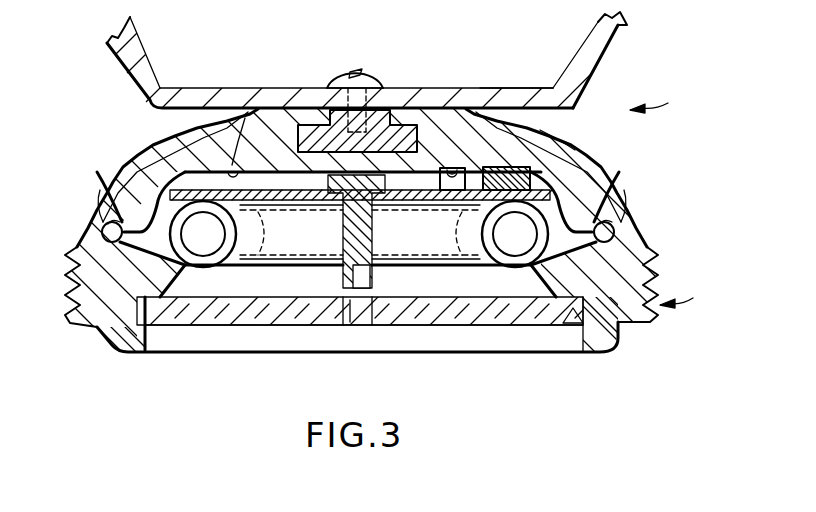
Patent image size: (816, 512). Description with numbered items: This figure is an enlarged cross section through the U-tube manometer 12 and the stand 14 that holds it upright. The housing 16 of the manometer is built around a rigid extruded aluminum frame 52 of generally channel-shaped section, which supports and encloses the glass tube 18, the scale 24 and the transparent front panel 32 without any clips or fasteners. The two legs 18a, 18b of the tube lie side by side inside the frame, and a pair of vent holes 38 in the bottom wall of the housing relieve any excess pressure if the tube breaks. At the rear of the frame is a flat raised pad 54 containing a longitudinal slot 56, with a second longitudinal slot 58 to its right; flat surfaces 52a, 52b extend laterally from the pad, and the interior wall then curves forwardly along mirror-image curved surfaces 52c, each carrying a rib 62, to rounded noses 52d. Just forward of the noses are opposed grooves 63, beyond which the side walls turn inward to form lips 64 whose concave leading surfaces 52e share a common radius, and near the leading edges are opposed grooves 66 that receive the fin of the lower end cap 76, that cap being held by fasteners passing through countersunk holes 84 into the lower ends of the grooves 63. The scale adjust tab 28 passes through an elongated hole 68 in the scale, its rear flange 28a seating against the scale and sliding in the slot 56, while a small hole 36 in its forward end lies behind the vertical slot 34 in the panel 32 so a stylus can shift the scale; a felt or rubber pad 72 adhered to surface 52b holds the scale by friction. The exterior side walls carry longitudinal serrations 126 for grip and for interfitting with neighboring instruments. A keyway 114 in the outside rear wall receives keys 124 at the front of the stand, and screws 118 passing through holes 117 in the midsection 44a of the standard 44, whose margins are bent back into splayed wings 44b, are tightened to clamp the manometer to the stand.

The manometer 12 is at (690, 301).
The stand 14 is at (663, 108).
The housing 16 is at (628, 330).
The glass tube 18 is at (359, 248).
The tube leg 18a is at (252, 294).
The tube leg 18b is at (515, 268).
The scale 24 is at (280, 170).
The scale adjust tab 28 is at (322, 270).
The flange 28a is at (416, 234).
The front panel 32 is at (178, 330).
The vertical slot 34 is at (350, 325).
The hole 36 is at (370, 277).
The vent holes 38 is at (268, 238).
The standard 44 is at (365, 57).
The midsection 44a is at (555, 83).
The splayed wings 44b is at (132, 57).
The frame 52 is at (592, 158).
The flat surface 52a is at (232, 165).
The flat surface 52b is at (612, 141).
The curved surfaces 52c is at (147, 178).
The rounded noses 52d is at (125, 210).
The leading surfaces 52e is at (195, 300).
The pad 54 is at (361, 210).
The longitudinal slot 56 is at (345, 235).
The second longitudinal slot 58 is at (445, 168).
The rib 62 is at (140, 197).
The grooves 63 is at (103, 222).
The lips 64 is at (133, 268).
The grooves 66 is at (108, 340).
The elongated hole 68 is at (345, 200).
The pad 72 is at (500, 168).
The lower end cap 76 is at (533, 330).
The countersunk holes 84 is at (103, 235).
The keyway 114 is at (310, 110).
The holes 117 is at (328, 85).
The screws 118 is at (355, 70).
The keys 124 is at (400, 135).
The serrations 126 is at (62, 300).